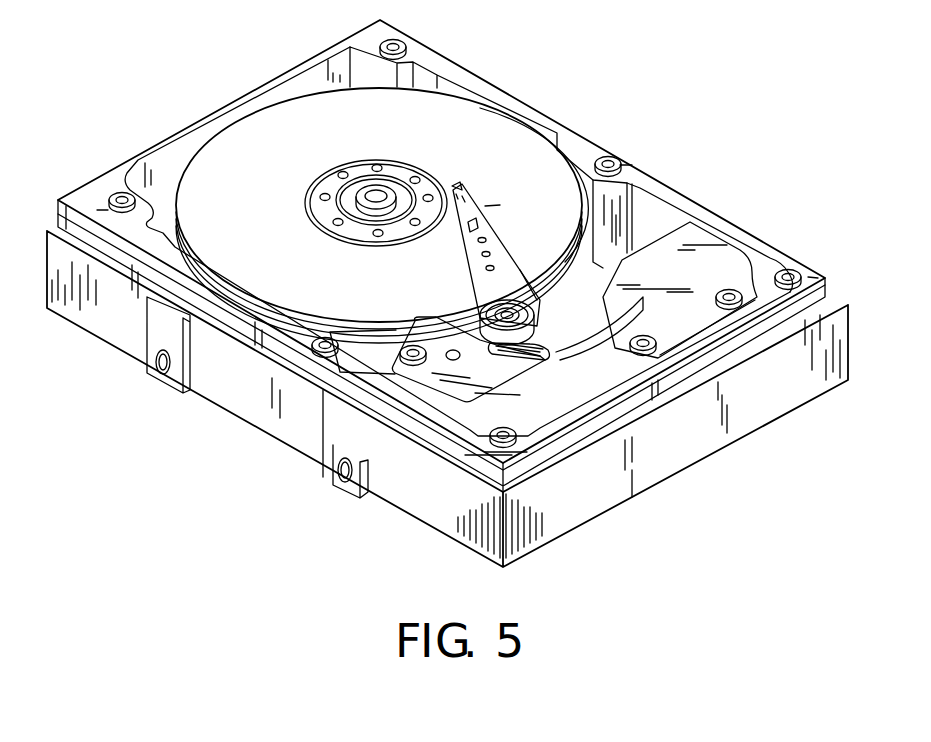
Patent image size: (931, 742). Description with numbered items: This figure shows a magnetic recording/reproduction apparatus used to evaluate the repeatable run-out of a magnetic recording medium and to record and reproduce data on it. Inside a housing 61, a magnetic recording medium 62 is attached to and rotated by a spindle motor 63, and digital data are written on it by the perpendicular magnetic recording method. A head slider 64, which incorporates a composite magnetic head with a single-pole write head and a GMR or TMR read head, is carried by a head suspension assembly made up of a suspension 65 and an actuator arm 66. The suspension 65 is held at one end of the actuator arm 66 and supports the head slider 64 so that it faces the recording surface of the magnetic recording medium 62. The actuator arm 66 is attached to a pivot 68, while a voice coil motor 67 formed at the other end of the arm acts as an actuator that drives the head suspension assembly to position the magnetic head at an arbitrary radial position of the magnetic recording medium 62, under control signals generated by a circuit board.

The housing 61 is at (767, 397).
The magnetic recording medium 62 is at (472, 112).
The spindle motor 63 is at (306, 196).
The head slider 64 is at (460, 188).
The suspension 65 is at (497, 240).
The actuator arm 66 is at (490, 313).
The voice coil motor 67 is at (548, 357).
The pivot 68 is at (707, 260).